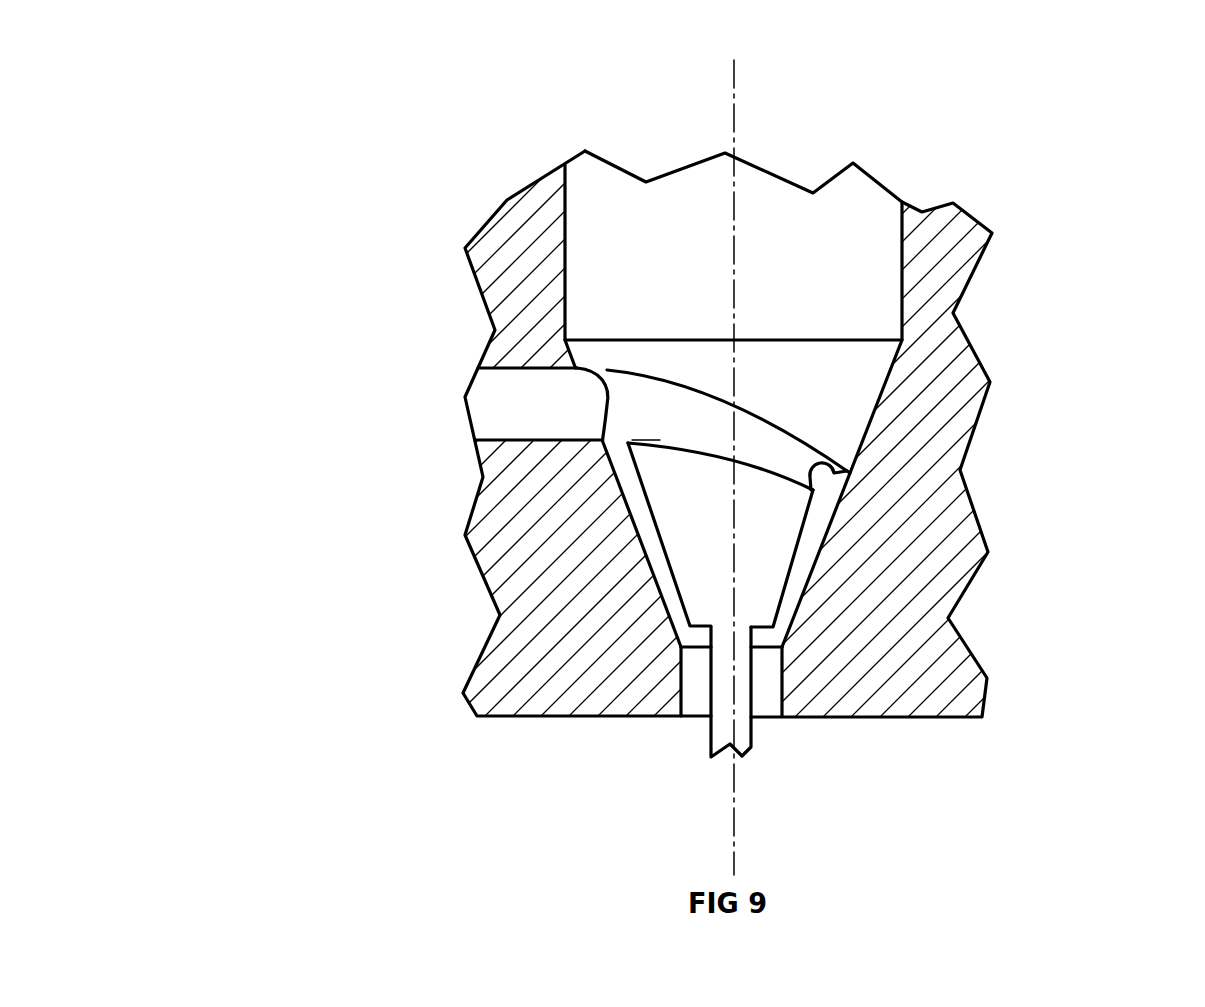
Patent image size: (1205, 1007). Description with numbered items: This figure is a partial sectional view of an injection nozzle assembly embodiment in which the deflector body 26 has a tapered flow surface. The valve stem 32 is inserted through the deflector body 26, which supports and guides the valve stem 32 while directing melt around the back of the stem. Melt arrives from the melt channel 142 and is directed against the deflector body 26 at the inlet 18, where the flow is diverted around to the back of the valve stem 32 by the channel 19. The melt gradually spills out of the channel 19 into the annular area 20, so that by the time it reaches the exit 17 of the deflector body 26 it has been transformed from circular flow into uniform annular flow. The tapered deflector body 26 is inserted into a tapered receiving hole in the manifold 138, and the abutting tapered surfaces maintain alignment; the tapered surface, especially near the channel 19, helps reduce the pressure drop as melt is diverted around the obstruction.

The deflector body 26 is at (860, 225).
The melt channel 142 is at (495, 407).
The channel 19 is at (772, 448).
The inlet 18 is at (620, 408).
The exit 17 is at (758, 534).
The annular area 20 is at (647, 523).
The manifold 138 is at (920, 552).
The valve stem 32 is at (730, 725).